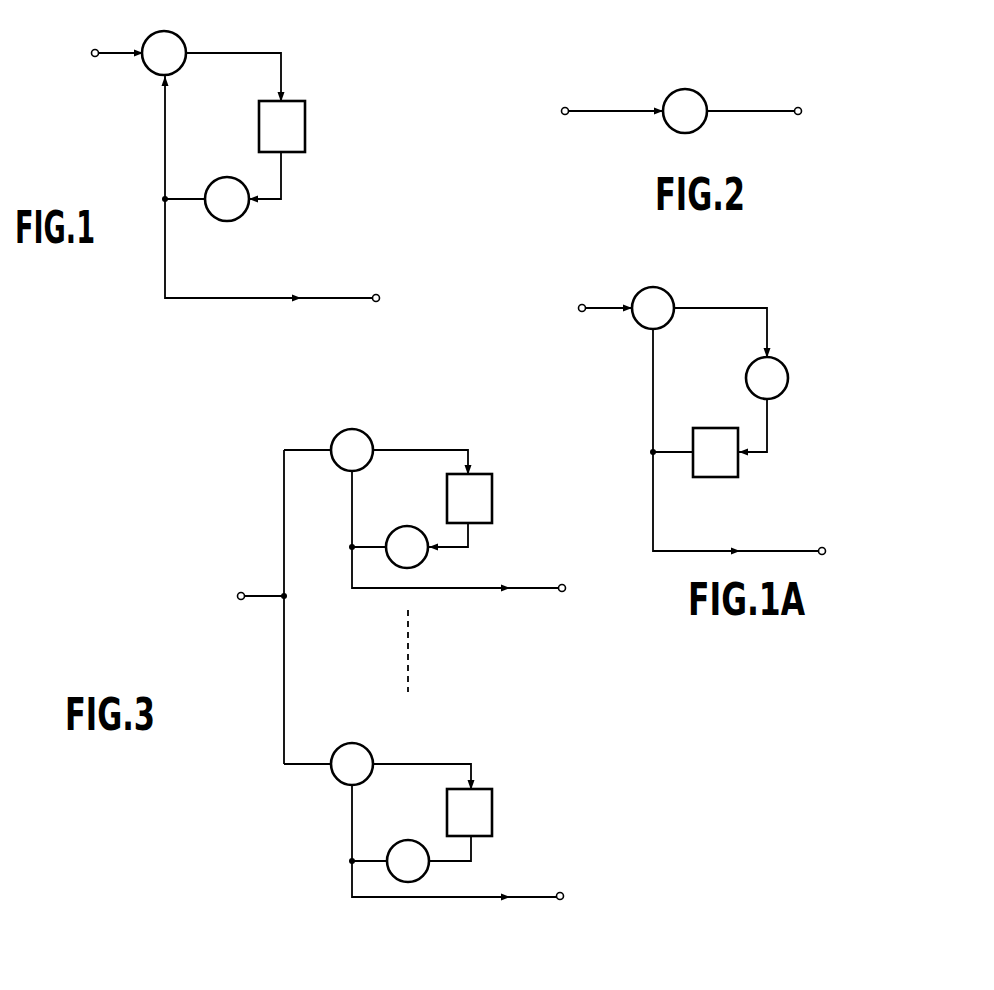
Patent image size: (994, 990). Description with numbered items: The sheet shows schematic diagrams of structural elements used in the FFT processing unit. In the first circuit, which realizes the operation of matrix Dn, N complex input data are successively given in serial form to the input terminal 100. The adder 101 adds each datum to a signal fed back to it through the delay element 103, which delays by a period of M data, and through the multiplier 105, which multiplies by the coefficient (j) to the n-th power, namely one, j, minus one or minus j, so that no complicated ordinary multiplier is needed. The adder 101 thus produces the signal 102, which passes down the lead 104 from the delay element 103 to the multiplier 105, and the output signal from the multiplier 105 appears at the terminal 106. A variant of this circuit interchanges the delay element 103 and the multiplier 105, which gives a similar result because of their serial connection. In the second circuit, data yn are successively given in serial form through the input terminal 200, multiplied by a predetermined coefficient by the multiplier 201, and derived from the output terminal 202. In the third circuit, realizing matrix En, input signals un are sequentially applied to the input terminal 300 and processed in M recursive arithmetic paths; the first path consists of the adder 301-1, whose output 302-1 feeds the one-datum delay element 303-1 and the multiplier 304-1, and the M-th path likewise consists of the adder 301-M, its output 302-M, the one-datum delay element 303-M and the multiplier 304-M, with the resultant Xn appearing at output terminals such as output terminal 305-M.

In FIG. 1, the input terminal 100 is at (94, 50).
In FIG. 1A, the input terminal 100 is at (582, 304).
In FIG. 1, the adder 101 is at (170, 30).
In FIG. 1A, the adder 101 is at (662, 290).
In FIG. 1, the signal 102 is at (284, 74).
In FIG. 1, the delay element 103 is at (306, 120).
In FIG. 1A, the delay element 103 is at (725, 477).
In FIG. 1, the delay output lead 104 is at (284, 196).
In FIG. 1, the multiplier 105 is at (240, 216).
In FIG. 1A, the multiplier 105 is at (778, 360).
In FIG. 1, the terminal 106 is at (377, 294).
In FIG. 1A, the terminal 106 is at (822, 547).
In FIG. 2, the input terminal 200 is at (565, 107).
In FIG. 2, the multiplier 201 is at (676, 70).
In FIG. 2, the output terminal 202 is at (798, 115).
In FIG. 3, the input terminal 300 is at (241, 592).
In FIG. 3, the adder 301-1 is at (368, 410).
In FIG. 3, the adder output lead (first stage) 302-1 is at (470, 450).
In FIG. 3, the one-datum delay element 303-1 is at (493, 498).
In FIG. 3, the multiplier 304-1 is at (425, 562).
In FIG. 3, the adder 301-M is at (356, 742).
In FIG. 3, the adder output lead (M-th stage) 302-M is at (473, 766).
In FIG. 3, the one-datum delay element 303-M is at (494, 810).
In FIG. 3, the multiplier 304-M is at (430, 874).
In FIG. 3, the output terminal 305-M is at (562, 900).